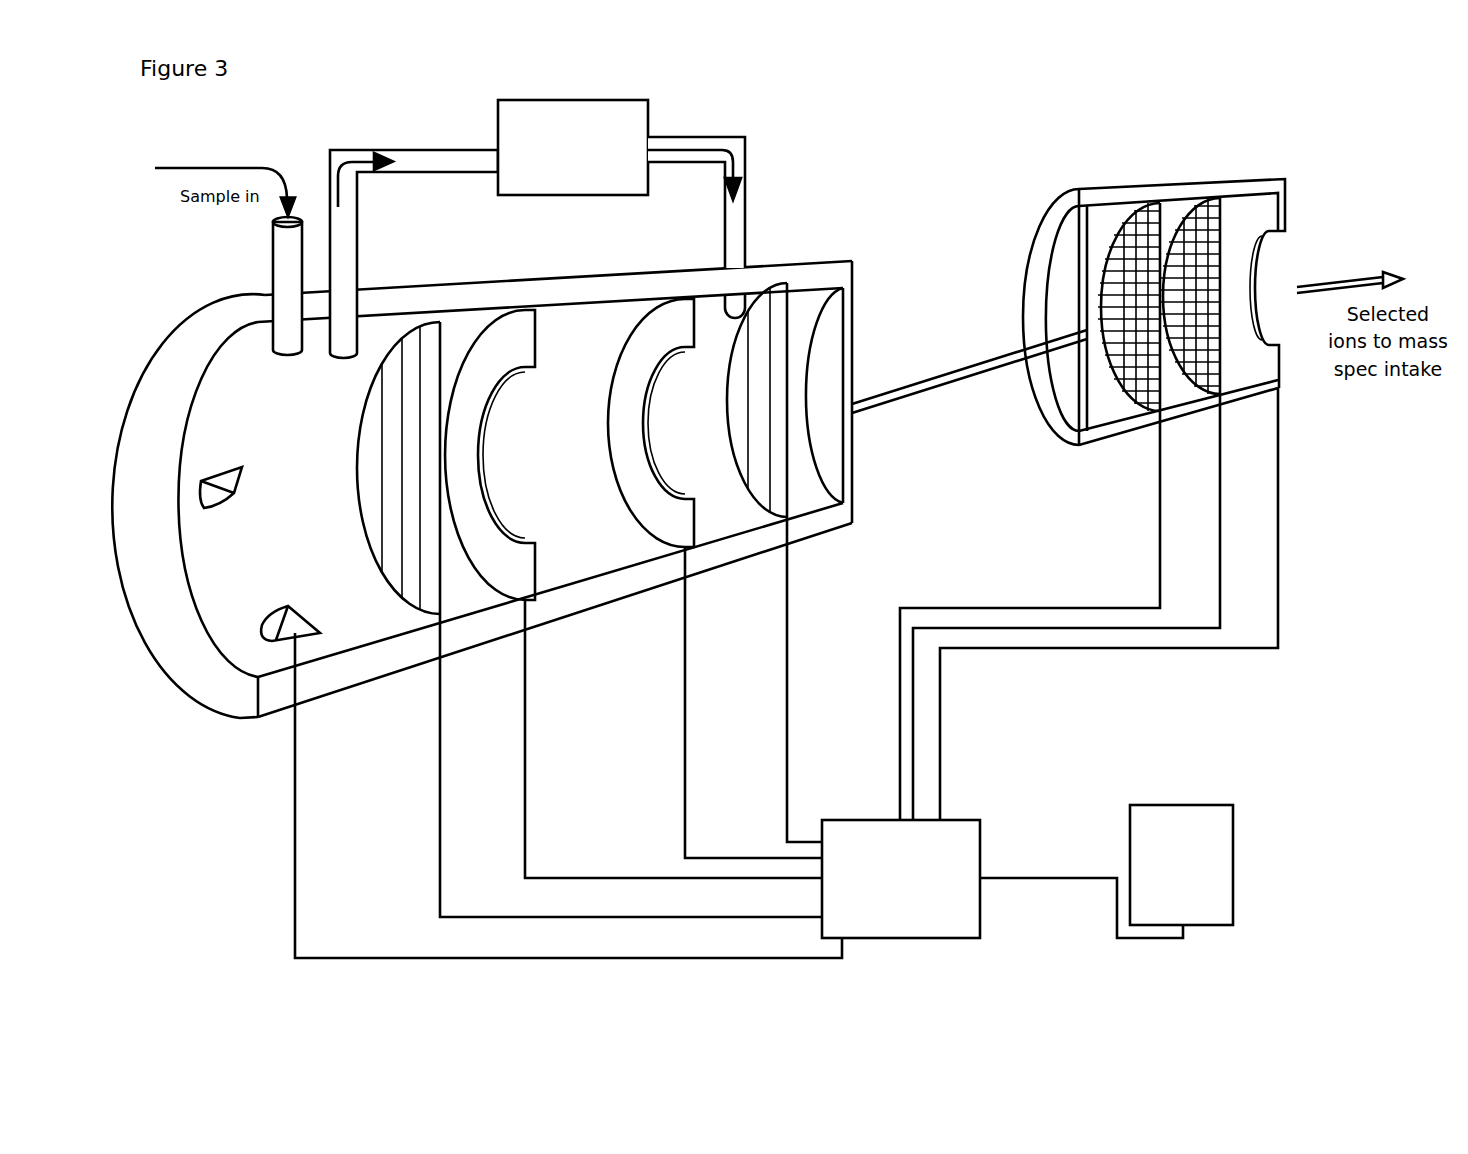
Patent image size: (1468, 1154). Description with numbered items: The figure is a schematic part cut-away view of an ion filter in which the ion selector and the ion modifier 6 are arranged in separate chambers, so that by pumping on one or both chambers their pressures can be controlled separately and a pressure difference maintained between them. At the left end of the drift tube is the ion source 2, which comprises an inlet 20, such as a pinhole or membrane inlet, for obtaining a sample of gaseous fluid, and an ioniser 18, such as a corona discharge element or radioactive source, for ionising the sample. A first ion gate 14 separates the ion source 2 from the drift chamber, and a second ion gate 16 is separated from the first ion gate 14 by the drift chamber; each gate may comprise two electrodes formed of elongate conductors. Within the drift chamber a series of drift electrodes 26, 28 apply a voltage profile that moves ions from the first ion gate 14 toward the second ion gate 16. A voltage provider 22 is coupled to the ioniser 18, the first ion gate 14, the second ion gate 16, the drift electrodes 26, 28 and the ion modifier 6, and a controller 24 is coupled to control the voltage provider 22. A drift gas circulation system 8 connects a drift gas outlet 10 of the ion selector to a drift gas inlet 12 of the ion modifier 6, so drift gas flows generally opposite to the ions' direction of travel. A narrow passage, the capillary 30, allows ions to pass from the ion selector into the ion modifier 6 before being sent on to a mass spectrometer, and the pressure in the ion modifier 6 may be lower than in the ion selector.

The ion source 2 is at (172, 334).
The ion modifier 6 is at (1214, 173).
The drift gas circulation system 8 is at (586, 112).
The drift gas outlet 10 is at (367, 330).
The drift gas inlet 12 is at (742, 308).
The first ion gate 14 is at (420, 614).
The second ion gate 16 is at (790, 516).
The ioniser 18 is at (225, 660).
The inlet 20 is at (280, 267).
The voltage provider 22 is at (1002, 879).
The controller 24 is at (1181, 865).
The drift electrode 26 is at (530, 598).
The drift electrode 28 is at (688, 548).
The capillary 30 is at (947, 383).